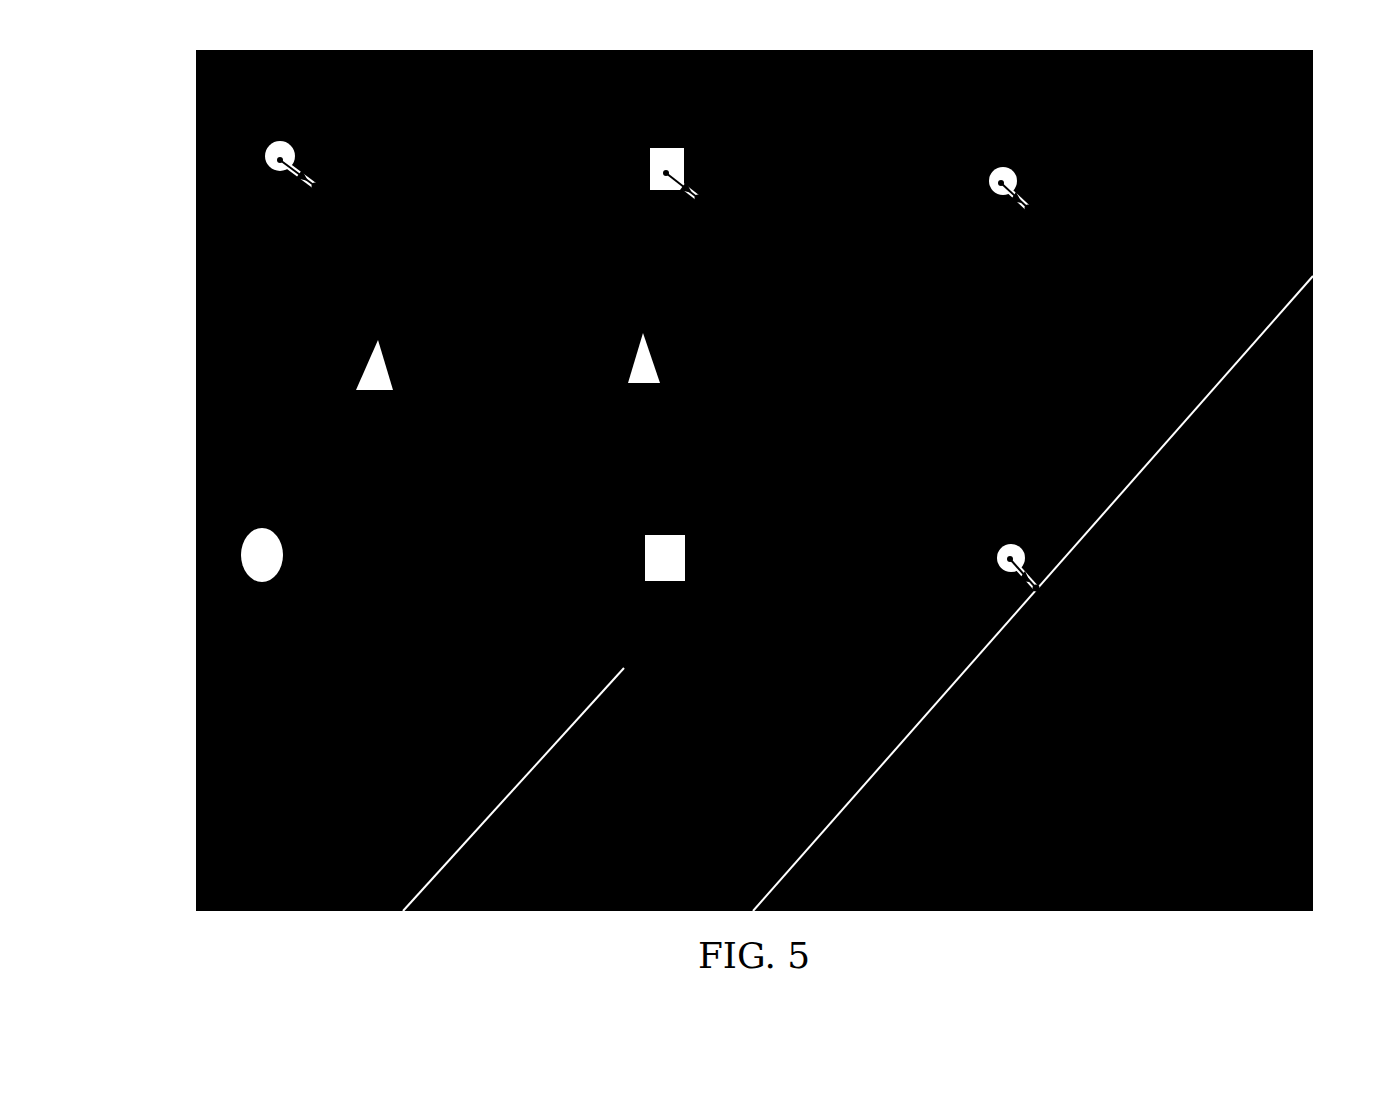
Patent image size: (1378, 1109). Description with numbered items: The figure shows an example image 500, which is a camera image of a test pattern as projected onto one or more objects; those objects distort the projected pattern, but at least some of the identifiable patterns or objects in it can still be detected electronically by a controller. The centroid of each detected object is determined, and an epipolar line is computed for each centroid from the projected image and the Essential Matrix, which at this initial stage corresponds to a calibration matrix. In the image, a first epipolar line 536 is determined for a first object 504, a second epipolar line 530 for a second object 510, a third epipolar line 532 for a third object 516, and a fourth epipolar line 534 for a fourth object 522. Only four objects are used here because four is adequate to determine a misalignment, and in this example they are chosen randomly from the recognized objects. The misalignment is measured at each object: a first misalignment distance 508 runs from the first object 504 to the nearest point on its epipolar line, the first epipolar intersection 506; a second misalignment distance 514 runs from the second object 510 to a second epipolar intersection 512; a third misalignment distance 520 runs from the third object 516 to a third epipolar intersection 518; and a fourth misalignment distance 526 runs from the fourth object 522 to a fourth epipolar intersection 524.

The image 500 is at (138, 354).
The first object 504 is at (258, 150).
The first epipolar intersection 506 is at (309, 179).
The first misalignment distance 508 is at (290, 162).
The second object 510 is at (642, 156).
The second epipolar intersection 512 is at (693, 189).
The second misalignment distance 514 is at (669, 186).
The third object 516 is at (982, 170).
The third epipolar intersection 518 is at (1021, 200).
The third misalignment distance 520 is at (1003, 178).
The fourth object 522 is at (989, 553).
The fourth epipolar intersection 524 is at (1029, 580).
The fourth misalignment distance 526 is at (1012, 556).
The second epipolar line 530 is at (228, 662).
The third epipolar line 532 is at (396, 886).
The fourth epipolar line 534 is at (1276, 299).
The first epipolar line 536 is at (228, 252).